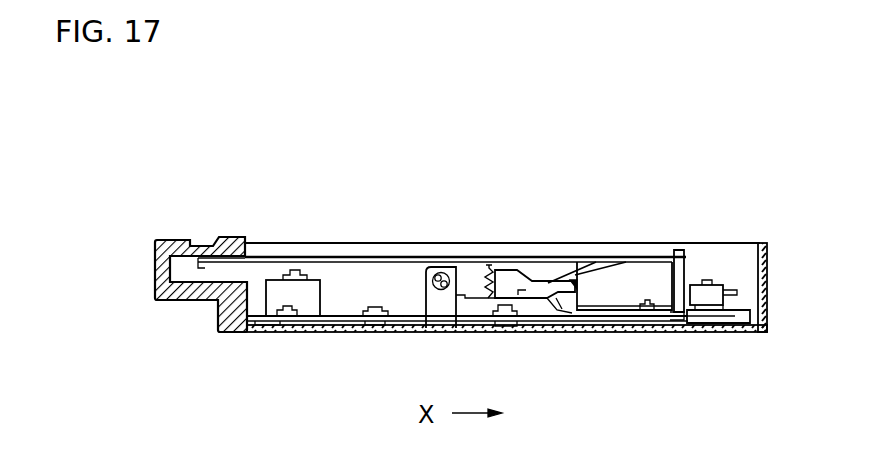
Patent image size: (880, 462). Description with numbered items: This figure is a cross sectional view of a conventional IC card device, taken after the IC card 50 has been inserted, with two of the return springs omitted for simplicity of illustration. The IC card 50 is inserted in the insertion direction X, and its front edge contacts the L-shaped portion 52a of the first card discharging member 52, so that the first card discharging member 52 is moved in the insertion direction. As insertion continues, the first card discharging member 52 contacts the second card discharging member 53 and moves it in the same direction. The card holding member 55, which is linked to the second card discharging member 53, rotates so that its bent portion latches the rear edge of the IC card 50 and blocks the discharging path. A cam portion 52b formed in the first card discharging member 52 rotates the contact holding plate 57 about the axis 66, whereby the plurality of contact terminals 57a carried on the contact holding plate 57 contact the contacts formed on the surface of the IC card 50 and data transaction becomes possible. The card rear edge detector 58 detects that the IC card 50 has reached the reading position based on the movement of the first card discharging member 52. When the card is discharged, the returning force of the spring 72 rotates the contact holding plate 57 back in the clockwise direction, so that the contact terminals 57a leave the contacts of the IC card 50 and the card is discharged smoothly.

The IC card 50 is at (378, 257).
The card holding member 55 is at (257, 280).
The axis 66 is at (440, 267).
The spring 72 is at (490, 296).
The contact holding plate 57 is at (502, 280).
The contact terminals 57a is at (549, 282).
The L-shaped portion 52a is at (696, 253).
The first card discharging member 52 is at (680, 275).
The cam portion 52b is at (552, 308).
The card rear edge detector 58 is at (716, 296).
The second card discharging member 53 is at (748, 318).